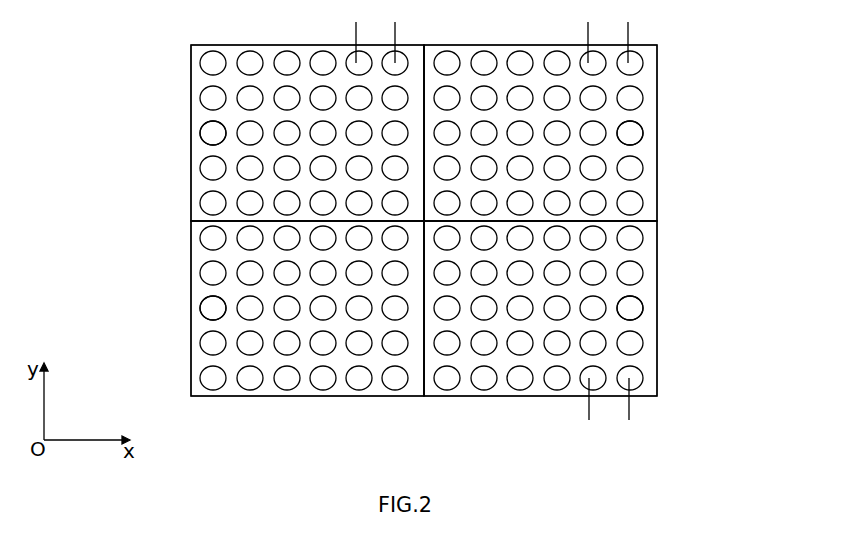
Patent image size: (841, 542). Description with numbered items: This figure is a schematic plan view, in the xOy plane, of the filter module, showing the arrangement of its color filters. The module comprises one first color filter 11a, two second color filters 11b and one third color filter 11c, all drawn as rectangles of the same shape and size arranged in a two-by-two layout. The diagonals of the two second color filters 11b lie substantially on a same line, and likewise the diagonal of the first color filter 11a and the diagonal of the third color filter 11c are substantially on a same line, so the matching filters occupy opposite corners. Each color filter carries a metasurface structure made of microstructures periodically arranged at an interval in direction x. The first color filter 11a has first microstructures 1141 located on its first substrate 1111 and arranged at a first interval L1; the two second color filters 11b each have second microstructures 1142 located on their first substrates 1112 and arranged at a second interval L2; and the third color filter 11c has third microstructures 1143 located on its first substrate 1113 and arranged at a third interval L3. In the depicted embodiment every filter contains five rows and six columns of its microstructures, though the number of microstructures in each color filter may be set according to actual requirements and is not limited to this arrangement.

The first substrate of the first color filter 1111 is at (198, 77).
The first substrates of the second color filters 1112 is at (645, 76).
The first substrate of the third color filter 1113 is at (645, 252).
The first microstructures 1141 is at (205, 128).
The second microstructures 1142 is at (643, 128).
The third microstructures 1143 is at (643, 304).
The first color filter 11a is at (307, 133).
The second color filters 11b is at (424, 220).
The third color filter 11c is at (540, 308).
The first interval L1 is at (375, 42).
The second interval L2 is at (608, 42).
The third interval L3 is at (609, 399).